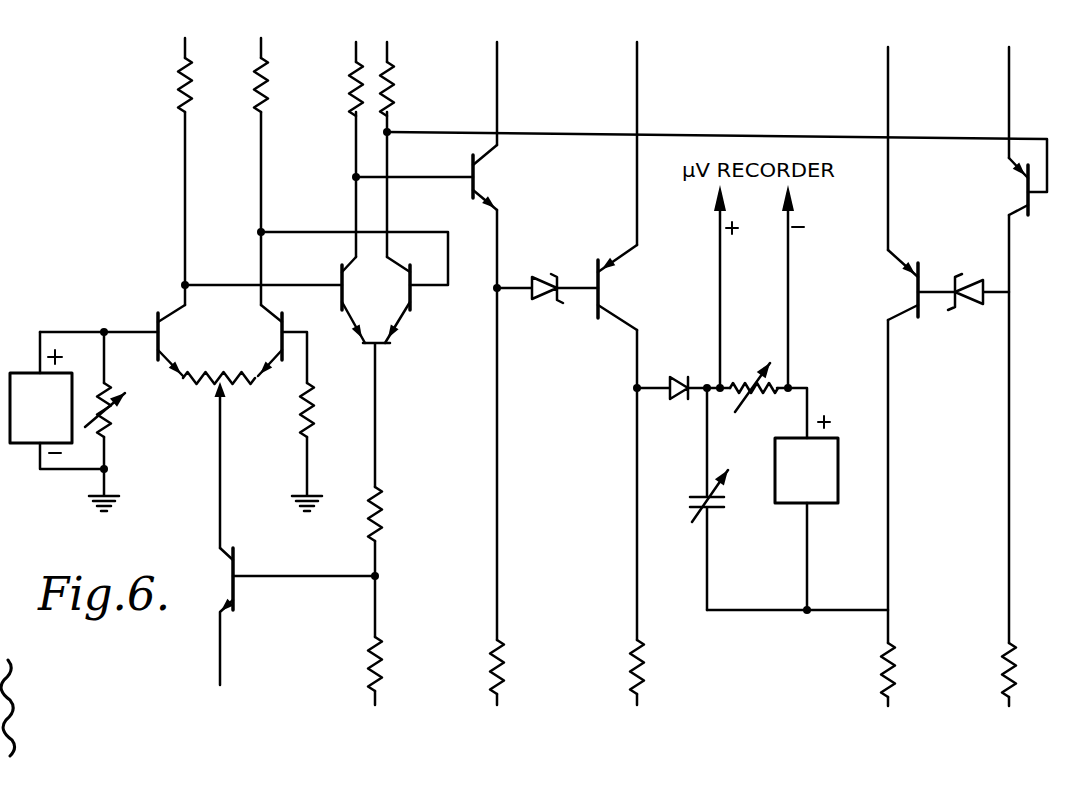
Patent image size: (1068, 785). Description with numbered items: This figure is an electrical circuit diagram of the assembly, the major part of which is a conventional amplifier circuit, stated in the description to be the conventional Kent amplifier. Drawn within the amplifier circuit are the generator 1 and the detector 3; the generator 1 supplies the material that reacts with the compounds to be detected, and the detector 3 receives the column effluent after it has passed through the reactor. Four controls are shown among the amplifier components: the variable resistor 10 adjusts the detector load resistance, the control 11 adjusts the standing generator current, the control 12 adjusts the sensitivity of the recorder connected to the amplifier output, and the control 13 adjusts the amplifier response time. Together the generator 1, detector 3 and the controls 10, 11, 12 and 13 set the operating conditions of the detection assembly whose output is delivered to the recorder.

The generator 1 is at (811, 499).
The detector 3 is at (47, 437).
The variable resistor 10 is at (118, 413).
The control 11 is at (223, 387).
The control 12 is at (749, 379).
The control 13 is at (712, 511).